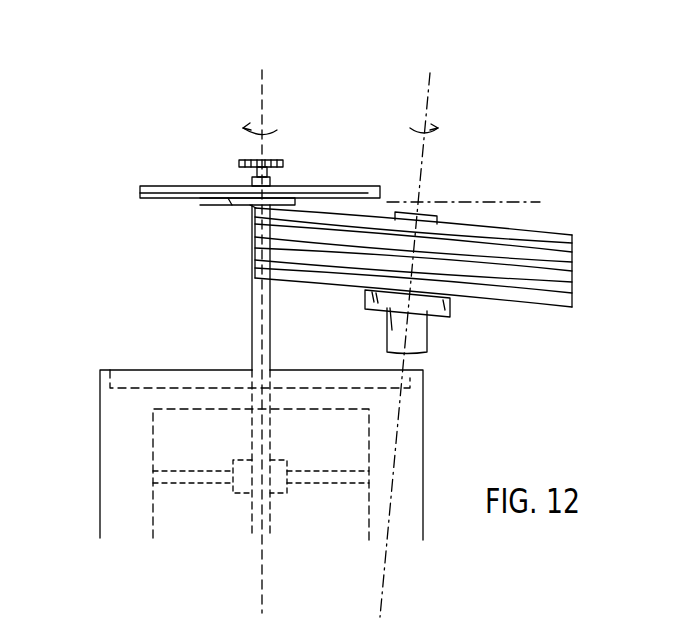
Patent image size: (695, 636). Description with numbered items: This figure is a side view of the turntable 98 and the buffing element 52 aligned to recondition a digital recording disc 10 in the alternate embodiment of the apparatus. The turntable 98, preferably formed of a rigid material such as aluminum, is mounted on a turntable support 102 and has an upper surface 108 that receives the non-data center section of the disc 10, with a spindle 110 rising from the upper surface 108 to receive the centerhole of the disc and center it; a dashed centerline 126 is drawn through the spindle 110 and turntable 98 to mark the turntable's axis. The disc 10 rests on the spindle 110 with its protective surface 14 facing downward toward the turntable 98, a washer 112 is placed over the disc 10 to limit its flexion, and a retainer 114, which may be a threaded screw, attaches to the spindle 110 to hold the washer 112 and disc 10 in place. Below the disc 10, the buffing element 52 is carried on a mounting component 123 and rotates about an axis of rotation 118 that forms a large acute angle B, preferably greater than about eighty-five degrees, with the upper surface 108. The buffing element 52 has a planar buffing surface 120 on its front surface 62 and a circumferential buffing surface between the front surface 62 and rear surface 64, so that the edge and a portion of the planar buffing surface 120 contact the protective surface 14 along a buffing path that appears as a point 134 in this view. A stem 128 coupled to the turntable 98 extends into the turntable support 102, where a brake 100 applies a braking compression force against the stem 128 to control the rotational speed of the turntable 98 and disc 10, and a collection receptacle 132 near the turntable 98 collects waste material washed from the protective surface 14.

The digital recording disc 10 is at (140, 195).
The protective surface 14 is at (152, 203).
The buffing element 52 is at (572, 265).
The front surface 62 is at (560, 231).
The rear surface 64 is at (513, 300).
The turntable 98 is at (228, 201).
The brake 100 is at (233, 492).
The turntable support 102 is at (100, 450).
The upper surface 108 is at (200, 198).
The spindle 110 is at (252, 180).
The washer 112 is at (152, 186).
The retainer 114 is at (290, 163).
The axis of rotation 118 is at (427, 90).
The planar buffing surface 120 is at (487, 223).
The mounting component 123 is at (447, 343).
The vertical axis 126 is at (262, 80).
The stem 128 is at (273, 312).
The collection receptacle 132 is at (130, 375).
The buffing path 134 is at (252, 206).
The acute angle B is at (447, 197).